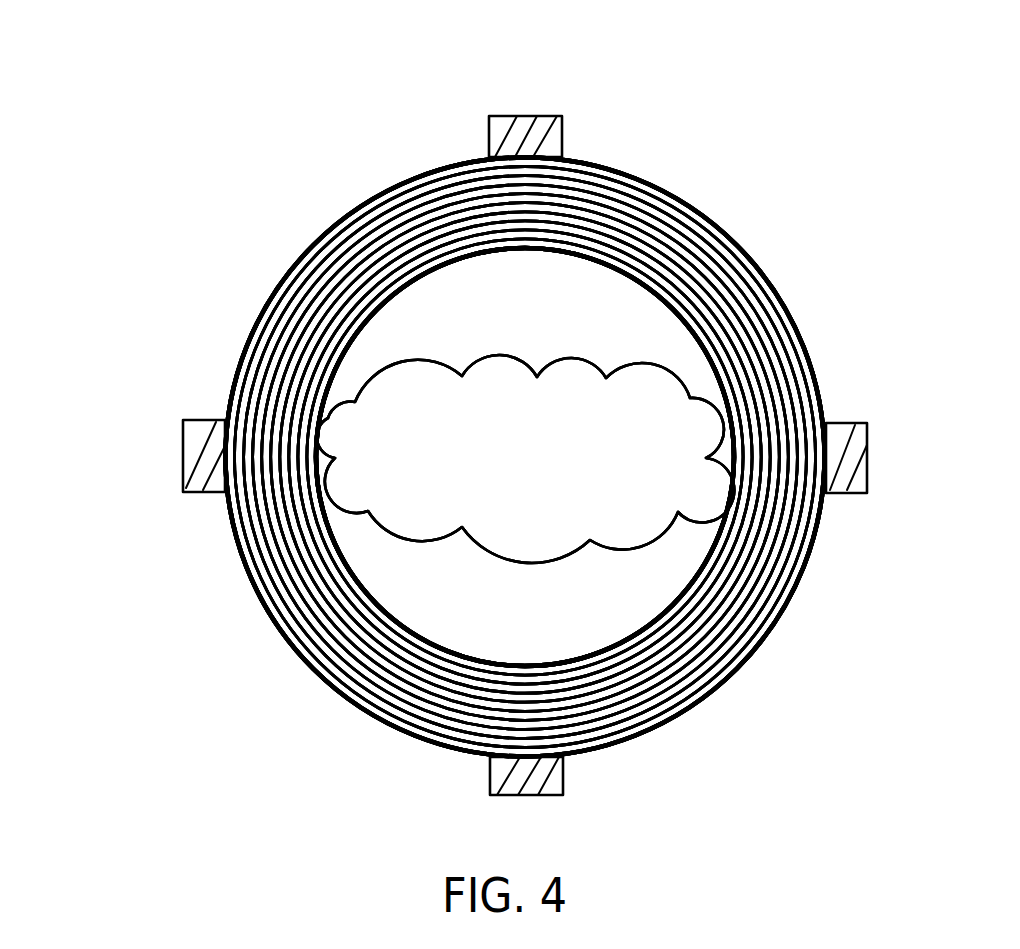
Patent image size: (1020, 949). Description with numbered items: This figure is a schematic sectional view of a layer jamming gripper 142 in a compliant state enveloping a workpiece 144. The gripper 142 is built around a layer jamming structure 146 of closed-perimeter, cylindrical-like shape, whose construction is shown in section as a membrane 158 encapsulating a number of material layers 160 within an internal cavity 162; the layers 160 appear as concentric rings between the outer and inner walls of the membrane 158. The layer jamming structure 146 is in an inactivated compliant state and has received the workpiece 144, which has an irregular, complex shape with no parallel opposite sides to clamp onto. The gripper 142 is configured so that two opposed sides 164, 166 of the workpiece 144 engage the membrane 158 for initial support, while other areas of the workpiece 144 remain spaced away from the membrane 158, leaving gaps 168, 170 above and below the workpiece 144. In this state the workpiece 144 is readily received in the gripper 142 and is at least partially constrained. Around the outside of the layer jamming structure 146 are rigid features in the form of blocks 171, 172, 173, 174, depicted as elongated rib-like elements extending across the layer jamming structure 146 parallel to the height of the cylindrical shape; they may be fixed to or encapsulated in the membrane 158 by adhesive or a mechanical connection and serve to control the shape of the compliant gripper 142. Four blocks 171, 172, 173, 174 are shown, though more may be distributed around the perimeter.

The gripper 142 is at (712, 131).
The workpiece 144 is at (553, 466).
The layer jamming structure 146 is at (425, 173).
The membrane 158 is at (373, 312).
The material layers 160 is at (713, 307).
The internal cavity 162 is at (265, 570).
The opposed side of the workpiece 164 is at (332, 425).
The opposed side of the workpiece 166 is at (720, 474).
The gap 168 is at (560, 315).
The gap 170 is at (590, 593).
The block 171 is at (183, 423).
The block 172 is at (523, 116).
The block 173 is at (867, 460).
The block 174 is at (492, 798).